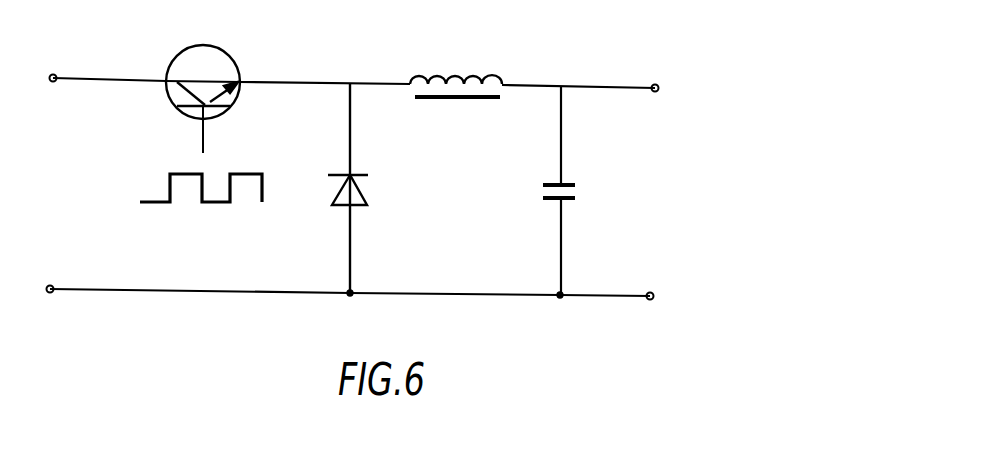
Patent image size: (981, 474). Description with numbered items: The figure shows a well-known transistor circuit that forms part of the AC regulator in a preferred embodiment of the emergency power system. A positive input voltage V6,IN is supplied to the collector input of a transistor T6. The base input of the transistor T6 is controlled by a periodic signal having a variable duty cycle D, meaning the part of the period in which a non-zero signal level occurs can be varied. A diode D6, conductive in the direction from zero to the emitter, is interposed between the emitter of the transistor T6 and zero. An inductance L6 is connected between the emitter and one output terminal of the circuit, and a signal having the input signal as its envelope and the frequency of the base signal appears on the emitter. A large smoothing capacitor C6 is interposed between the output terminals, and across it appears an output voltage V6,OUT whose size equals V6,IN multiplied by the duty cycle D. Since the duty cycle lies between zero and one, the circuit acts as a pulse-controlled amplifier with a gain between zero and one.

The transistor T6 is at (205, 78).
The diode D6 is at (363, 188).
The inductance L6 is at (456, 62).
The smoothing capacitor C6 is at (570, 190).
The input voltage V6,IN is at (72, 190).
The output voltage V6,OUT is at (678, 197).